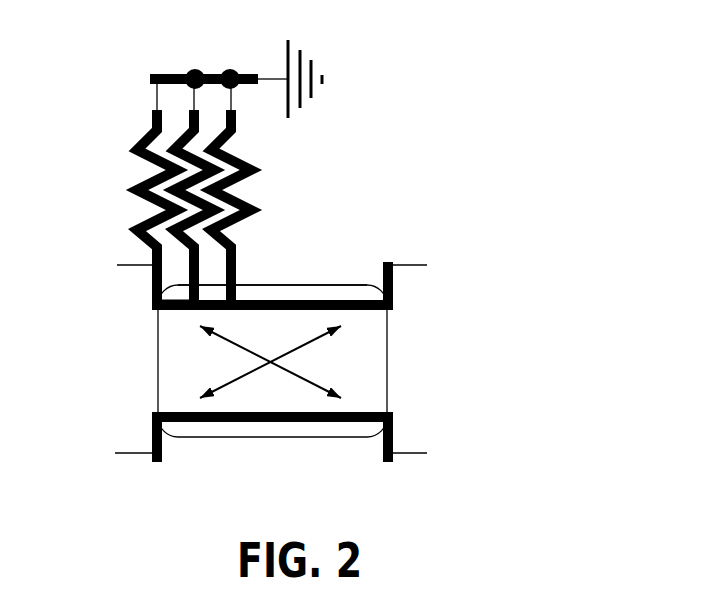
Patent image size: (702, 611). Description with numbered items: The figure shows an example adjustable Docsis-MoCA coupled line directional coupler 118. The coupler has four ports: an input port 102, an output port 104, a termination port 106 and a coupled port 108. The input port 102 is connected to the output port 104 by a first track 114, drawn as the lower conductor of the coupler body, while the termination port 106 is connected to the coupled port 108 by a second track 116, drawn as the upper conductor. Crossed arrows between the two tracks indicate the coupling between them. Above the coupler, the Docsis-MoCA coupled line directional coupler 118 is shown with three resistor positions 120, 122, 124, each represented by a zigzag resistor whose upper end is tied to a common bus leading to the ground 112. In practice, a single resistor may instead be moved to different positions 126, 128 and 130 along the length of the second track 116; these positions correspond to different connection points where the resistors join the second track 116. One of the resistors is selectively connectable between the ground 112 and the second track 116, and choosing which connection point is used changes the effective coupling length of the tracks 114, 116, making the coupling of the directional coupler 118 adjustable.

The input port 102 is at (162, 450).
The output port 104 is at (383, 450).
The termination port 106 is at (152, 290).
The coupled port 108 is at (383, 265).
The ground 112 is at (287, 50).
The first track 114 is at (277, 422).
The second track 116 is at (305, 300).
The Docsis-MoCA coupled line directional coupler 118 is at (313, 252).
The resistor position 120 is at (132, 145).
The resistor position 122 is at (153, 127).
The resistor position 124 is at (233, 138).
The position along second track 126 is at (153, 312).
The position along second track 128 is at (172, 298).
The position along second track 130 is at (242, 285).